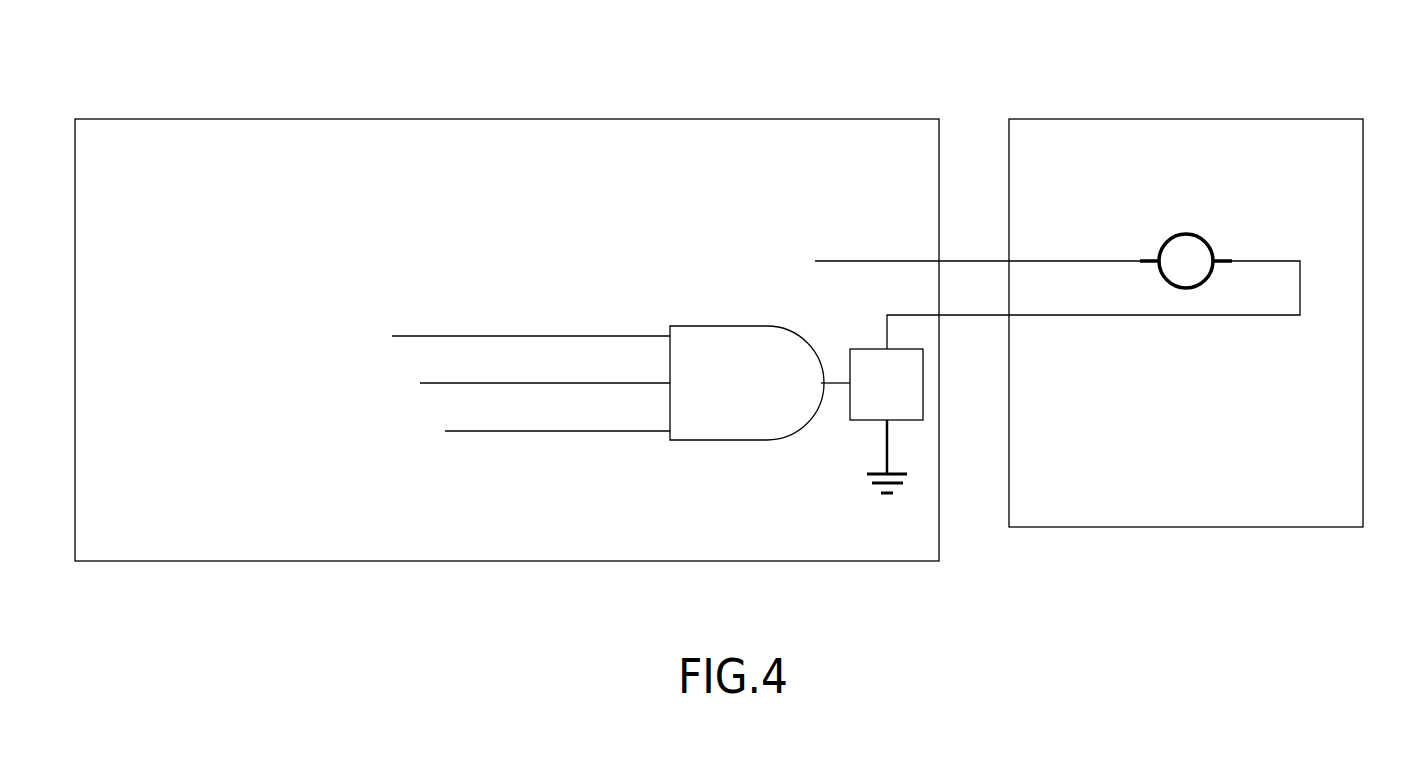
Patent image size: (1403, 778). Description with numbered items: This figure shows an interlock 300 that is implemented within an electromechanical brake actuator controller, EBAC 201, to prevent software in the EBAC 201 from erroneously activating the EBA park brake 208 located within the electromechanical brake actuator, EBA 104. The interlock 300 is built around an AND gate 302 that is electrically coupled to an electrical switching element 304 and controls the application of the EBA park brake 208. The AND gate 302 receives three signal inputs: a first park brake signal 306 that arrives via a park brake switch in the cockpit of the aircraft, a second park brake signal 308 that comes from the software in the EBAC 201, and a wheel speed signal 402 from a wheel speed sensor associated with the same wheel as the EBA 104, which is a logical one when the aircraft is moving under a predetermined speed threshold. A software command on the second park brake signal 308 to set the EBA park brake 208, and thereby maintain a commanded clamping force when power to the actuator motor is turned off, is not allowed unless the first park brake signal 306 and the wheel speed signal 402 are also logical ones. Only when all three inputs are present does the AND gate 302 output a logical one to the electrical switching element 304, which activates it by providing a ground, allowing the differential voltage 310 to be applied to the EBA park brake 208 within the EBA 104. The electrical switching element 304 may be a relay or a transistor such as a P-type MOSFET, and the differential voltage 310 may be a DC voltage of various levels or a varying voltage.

The electromechanical brake actuator controller (EBAC) 201 is at (289, 119).
The electromechanical brake actuator (EBA) 104 is at (1048, 119).
The wheel speed signal 402 is at (226, 312).
The first park brake signal 306 is at (86, 375).
The second park brake signal 308 is at (237, 443).
The interlock 300 is at (711, 379).
The AND gate 302 is at (697, 440).
The electrical switching element 304 is at (923, 418).
The differential voltage 310 is at (773, 244).
The EBA park brake 208 is at (1157, 243).